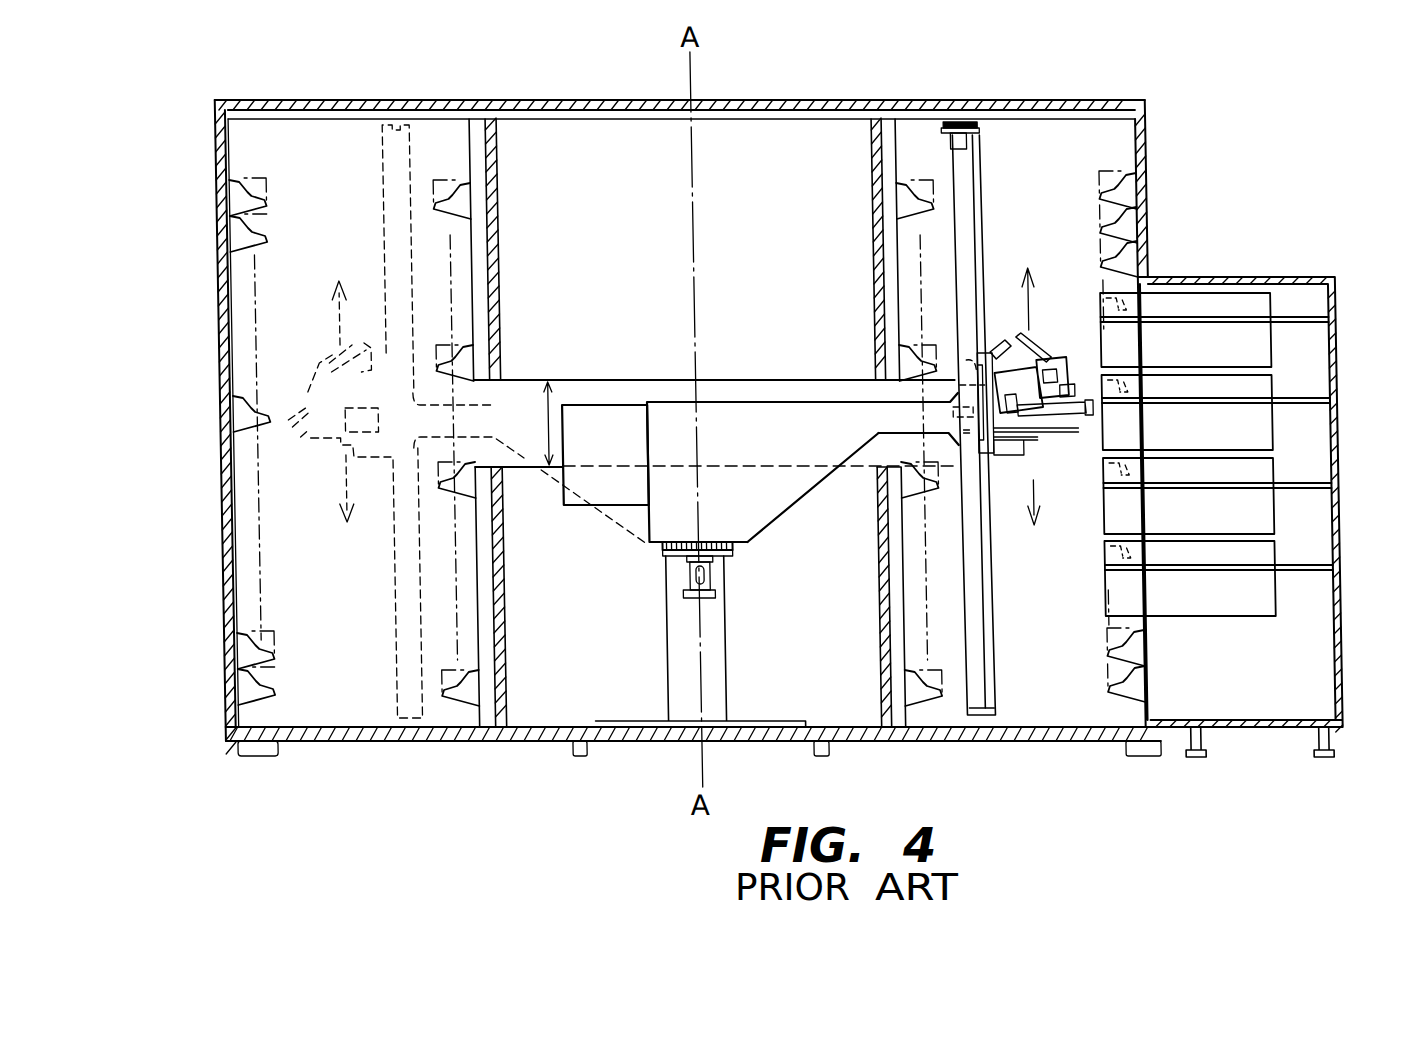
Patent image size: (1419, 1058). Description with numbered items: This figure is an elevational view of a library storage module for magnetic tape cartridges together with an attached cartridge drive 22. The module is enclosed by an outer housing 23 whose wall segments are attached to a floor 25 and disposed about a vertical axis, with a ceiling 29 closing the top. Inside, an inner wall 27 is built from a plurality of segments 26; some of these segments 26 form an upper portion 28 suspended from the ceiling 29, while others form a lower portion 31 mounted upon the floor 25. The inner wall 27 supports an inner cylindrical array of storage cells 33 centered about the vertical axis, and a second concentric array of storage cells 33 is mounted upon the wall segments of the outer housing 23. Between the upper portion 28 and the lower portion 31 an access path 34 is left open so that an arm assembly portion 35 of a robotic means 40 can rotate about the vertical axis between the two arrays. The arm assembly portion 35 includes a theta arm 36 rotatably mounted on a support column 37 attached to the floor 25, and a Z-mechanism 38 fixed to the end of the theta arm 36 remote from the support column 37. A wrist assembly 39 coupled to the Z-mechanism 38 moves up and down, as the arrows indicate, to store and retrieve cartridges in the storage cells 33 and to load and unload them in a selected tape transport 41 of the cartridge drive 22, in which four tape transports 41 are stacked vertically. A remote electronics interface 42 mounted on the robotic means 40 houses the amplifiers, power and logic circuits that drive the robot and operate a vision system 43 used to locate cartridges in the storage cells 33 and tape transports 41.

The cartridge drive 22 is at (1312, 690).
The outer housing 23 is at (221, 411).
The floor 25 is at (680, 748).
The segments 26 is at (503, 232).
The inner wall 27 is at (505, 176).
The upper portion 28 is at (859, 250).
The ceiling 29 is at (828, 119).
The lower portion 31 is at (514, 626).
The storage cells 33 is at (1106, 191).
The access path 34 is at (535, 423).
The arm assembly portion 35 is at (812, 492).
The theta arm 36 is at (826, 427).
The support column 37 is at (684, 680).
The Z-mechanism 38 is at (987, 657).
The wrist assembly 39 is at (1013, 383).
The robotic means 40 is at (1046, 333).
The tape transport 41 is at (1264, 343).
The remote electronics interface 42 is at (586, 428).
The vision system 43 is at (996, 350).